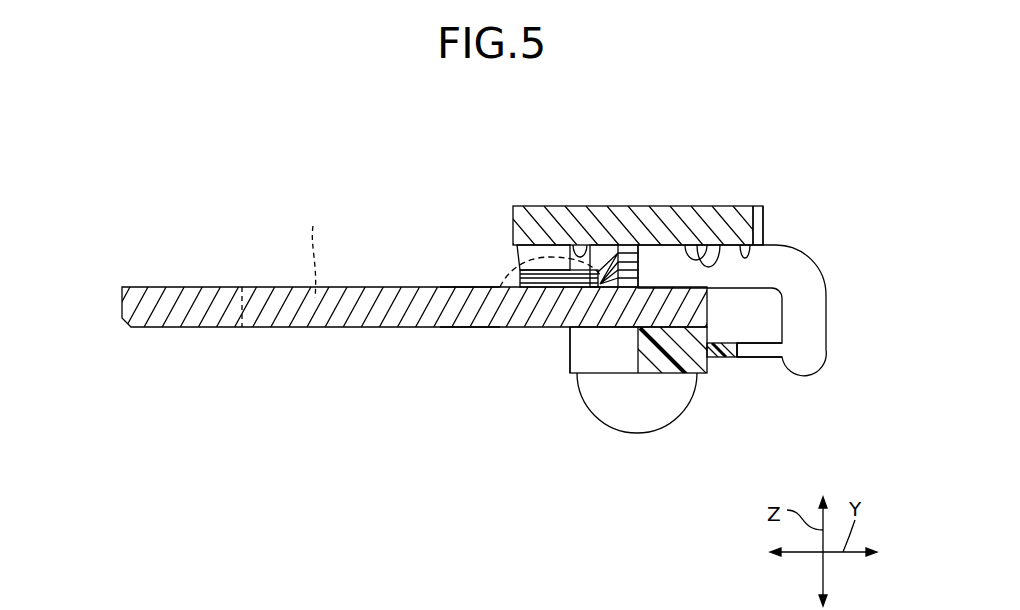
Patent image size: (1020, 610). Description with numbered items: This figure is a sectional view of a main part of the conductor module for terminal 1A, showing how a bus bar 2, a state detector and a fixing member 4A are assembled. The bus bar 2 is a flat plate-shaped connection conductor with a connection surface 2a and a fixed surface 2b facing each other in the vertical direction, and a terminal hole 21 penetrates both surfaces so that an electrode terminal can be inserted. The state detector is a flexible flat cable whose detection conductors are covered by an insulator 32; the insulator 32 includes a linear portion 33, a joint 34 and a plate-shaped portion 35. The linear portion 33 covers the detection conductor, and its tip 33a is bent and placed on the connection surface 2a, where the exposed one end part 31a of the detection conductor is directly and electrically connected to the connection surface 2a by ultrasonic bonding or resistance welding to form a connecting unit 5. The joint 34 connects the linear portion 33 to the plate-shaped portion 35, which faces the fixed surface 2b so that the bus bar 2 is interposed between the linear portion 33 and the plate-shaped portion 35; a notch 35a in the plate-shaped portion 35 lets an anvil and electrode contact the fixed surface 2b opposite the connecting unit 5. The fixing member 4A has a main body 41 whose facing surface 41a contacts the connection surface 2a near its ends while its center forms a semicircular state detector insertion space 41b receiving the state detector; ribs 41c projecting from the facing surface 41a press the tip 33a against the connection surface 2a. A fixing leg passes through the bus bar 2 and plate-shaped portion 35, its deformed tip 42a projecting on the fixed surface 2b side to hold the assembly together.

The conductor module for terminal 1A is at (244, 160).
The bus bar 2 is at (172, 288).
The terminal hole 21 is at (315, 250).
The connection surface 2a is at (462, 285).
The fixed surface 2b is at (462, 328).
The connecting unit 5 is at (508, 262).
The one end part 31a is at (547, 270).
The main body 41 is at (616, 243).
The facing surface 41a is at (752, 245).
The state detector insertion space 41b is at (602, 250).
The rib 41c is at (580, 250).
The fixing member 4A is at (634, 190).
The linear portion 33 is at (731, 299).
The tip 33a is at (653, 257).
The insulator 32 is at (730, 358).
The joint 34 is at (763, 348).
The plate-shaped portion 35 is at (593, 409).
The notch 35a is at (570, 348).
The tip 42a is at (608, 407).